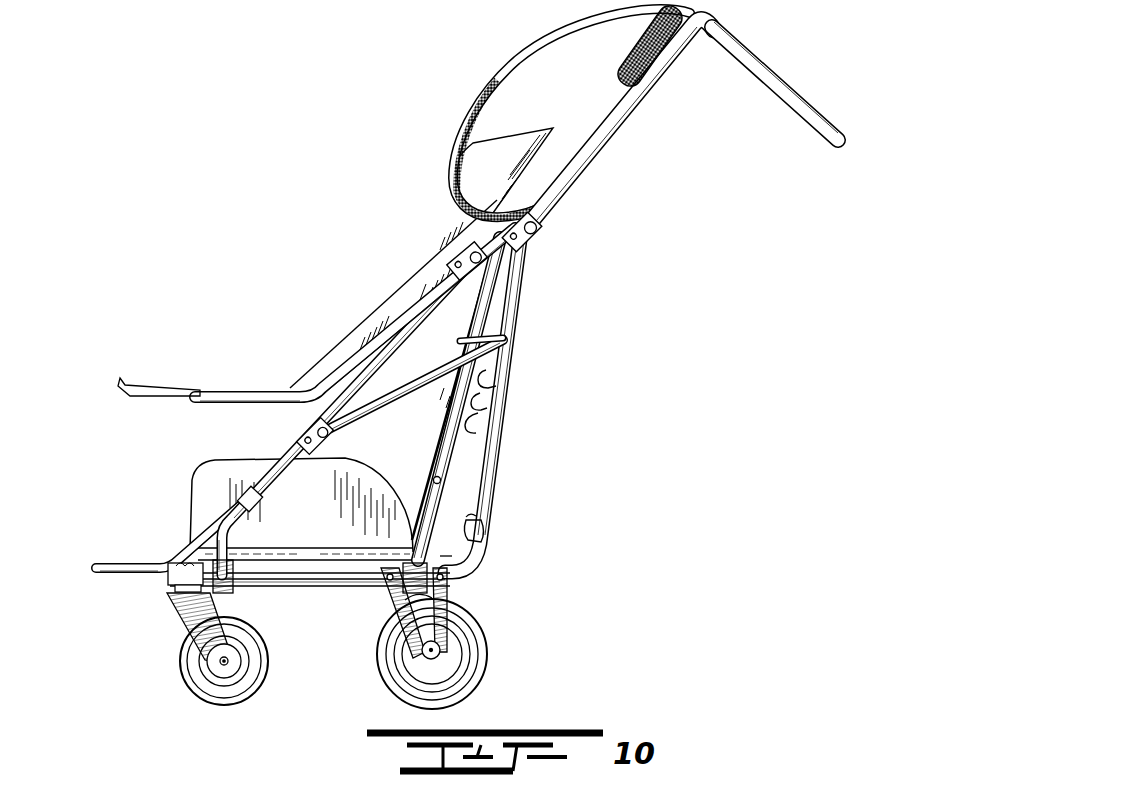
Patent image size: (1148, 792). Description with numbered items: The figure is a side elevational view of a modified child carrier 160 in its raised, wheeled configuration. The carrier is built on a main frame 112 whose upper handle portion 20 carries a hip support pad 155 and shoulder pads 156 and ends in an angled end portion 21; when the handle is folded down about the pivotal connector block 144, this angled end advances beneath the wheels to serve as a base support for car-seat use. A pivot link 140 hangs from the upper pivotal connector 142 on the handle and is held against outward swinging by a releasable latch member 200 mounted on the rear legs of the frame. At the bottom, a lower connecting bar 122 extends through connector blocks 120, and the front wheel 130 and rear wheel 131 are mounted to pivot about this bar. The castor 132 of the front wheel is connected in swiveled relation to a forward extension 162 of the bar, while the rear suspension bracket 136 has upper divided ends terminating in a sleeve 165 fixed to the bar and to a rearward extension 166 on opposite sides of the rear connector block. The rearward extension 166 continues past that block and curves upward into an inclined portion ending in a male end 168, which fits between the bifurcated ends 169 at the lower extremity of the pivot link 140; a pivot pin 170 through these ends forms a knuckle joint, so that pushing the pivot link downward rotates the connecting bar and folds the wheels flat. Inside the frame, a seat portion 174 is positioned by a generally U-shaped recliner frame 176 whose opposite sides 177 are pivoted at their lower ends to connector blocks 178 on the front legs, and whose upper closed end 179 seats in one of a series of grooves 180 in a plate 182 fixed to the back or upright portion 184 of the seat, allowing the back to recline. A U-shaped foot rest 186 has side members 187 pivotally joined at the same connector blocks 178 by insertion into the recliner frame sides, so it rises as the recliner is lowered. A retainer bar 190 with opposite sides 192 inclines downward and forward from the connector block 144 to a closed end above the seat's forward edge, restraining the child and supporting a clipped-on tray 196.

The handle portion 20 is at (603, 133).
The angled end portion of the handle member 21 is at (777, 73).
The main frame 112 is at (282, 447).
The connector block 120 is at (430, 588).
The lower connecting bar 122 is at (267, 590).
The front wheel 130 is at (183, 663).
The rear wheel 131 is at (478, 680).
The castor 132 is at (167, 598).
The rear suspension bracket 136 is at (430, 631).
The pivot link 140 is at (530, 288).
The upper pivotal connector 142 is at (537, 234).
The pivotal connector block 144 is at (457, 247).
The hip support pad 155 is at (637, 47).
The shoulder pads 156 is at (483, 100).
The carrier 160 is at (410, 278).
The forward continuation or extension of the connecting bar 162 is at (182, 575).
The sleeve 165 is at (447, 557).
The rearward extension 166 is at (478, 576).
The flange or male end 168 is at (480, 535).
The bifurcated ends 169 is at (470, 527).
The pivot pin 170 is at (477, 517).
The seat portion 174 is at (203, 473).
The recliner frame 176 is at (431, 372).
The opposite sides of the recliner frame 177 is at (440, 384).
The connector block 178 is at (303, 428).
The upper closed end of the recliner frame 179 is at (507, 340).
The grooves 180 is at (488, 378).
The plate 182 is at (470, 432).
The back or upright portion of the seat 184 is at (507, 145).
The foot rest 186 is at (93, 567).
The side members of the foot rest 187 is at (203, 530).
The retainer bar 190 is at (297, 385).
The opposite sides of the retainer bar 192 is at (365, 342).
The tray 196 is at (150, 388).
The releasable latch member 200 is at (441, 483).